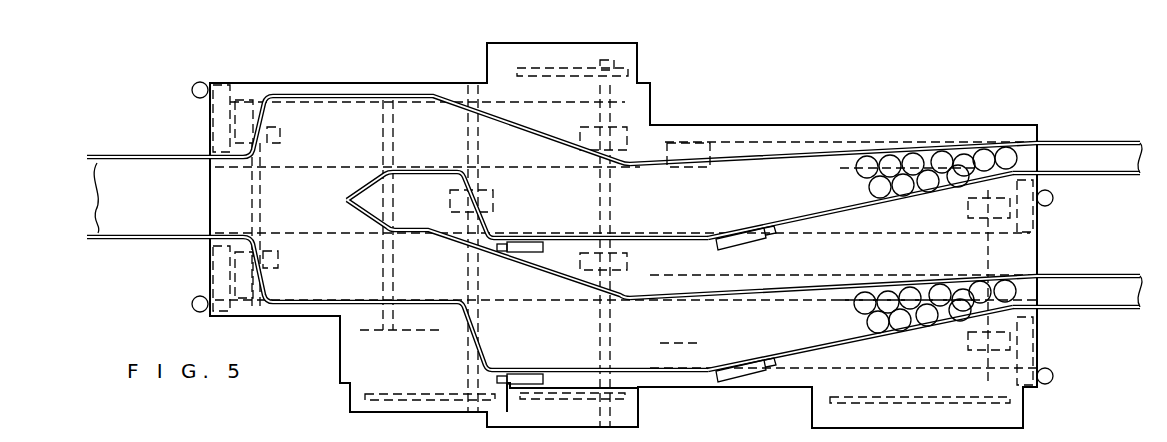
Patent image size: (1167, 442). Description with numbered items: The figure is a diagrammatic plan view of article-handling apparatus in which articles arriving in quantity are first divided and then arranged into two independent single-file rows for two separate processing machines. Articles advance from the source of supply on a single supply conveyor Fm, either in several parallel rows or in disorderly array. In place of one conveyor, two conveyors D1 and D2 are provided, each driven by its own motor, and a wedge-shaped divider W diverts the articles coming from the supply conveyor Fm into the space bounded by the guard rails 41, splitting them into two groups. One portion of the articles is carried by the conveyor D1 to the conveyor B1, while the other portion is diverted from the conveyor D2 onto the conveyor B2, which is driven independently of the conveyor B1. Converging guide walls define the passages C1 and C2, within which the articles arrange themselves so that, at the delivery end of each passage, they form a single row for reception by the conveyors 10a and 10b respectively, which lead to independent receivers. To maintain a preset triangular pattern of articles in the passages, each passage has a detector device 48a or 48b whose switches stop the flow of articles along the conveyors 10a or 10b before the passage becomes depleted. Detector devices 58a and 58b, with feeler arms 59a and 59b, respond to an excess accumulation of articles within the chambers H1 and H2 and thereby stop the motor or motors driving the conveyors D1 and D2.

The supply conveyor Fm is at (143, 185).
The guard rails 41 is at (314, 97).
The first conveyor D1 is at (338, 120).
The divider W is at (347, 198).
The first chamber H1 is at (517, 143).
The first combining conveyor B1 is at (655, 190).
The first passage C1 is at (840, 178).
The first delivery conveyor 10a is at (1100, 155).
The first feeler arm 59a is at (568, 228).
The first detector device 58a is at (535, 254).
The first detector device 48a is at (741, 246).
The second delivery conveyor 10b is at (1113, 293).
The second conveyor D2 is at (328, 280).
The second chamber H2 is at (513, 340).
The second combining conveyor B2 is at (683, 343).
The second passage C2 is at (835, 318).
The second feeler arm 59b is at (563, 360).
The second detector device 58b is at (527, 386).
The second detector device 48b is at (738, 380).